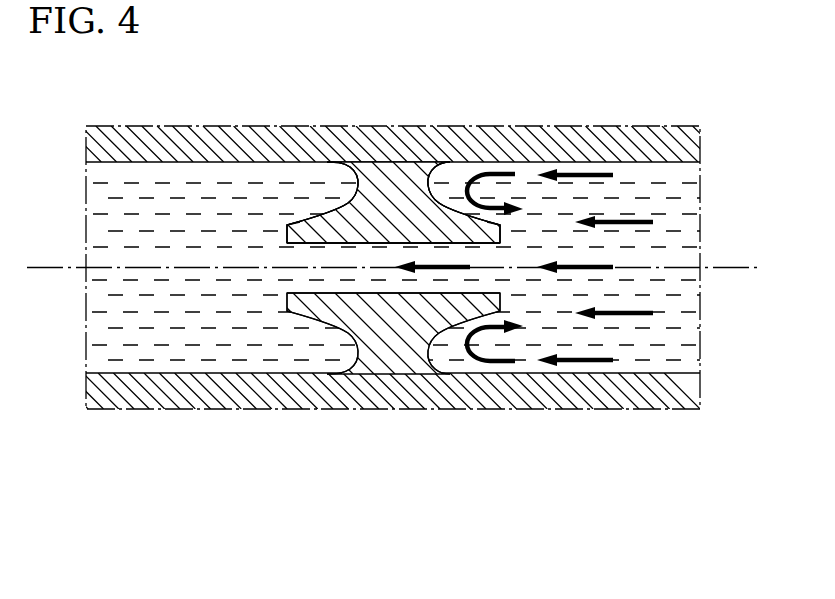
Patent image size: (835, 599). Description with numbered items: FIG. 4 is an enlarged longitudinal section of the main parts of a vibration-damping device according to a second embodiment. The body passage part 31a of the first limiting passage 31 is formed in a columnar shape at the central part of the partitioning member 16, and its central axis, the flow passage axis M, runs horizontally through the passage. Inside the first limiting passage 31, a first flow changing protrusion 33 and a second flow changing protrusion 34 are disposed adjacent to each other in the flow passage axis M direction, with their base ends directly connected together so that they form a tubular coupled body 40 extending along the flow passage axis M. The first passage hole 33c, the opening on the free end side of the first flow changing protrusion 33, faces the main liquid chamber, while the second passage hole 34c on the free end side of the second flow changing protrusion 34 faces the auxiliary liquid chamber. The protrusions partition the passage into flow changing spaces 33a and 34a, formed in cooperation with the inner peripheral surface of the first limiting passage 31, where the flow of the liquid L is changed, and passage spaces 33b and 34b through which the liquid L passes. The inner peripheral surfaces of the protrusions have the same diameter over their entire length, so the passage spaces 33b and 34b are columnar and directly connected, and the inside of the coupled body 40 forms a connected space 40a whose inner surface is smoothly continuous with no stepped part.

The partitioning member 16 is at (248, 423).
The first limiting passage 31 is at (135, 386).
The body passage part 31a is at (208, 372).
The first flow changing protrusion 33 is at (477, 309).
The flow changing space 33a is at (468, 181).
The first passage space 33b is at (440, 240).
The first passage hole 33c is at (496, 242).
The second flow changing protrusion 34 is at (313, 313).
The flow changing space 34a is at (316, 181).
The second passage space 34b is at (344, 240).
The second passage hole 34c is at (288, 240).
The coupled body 40 is at (293, 326).
The connected space 40a is at (393, 304).
The flow passage axis M is at (736, 267).
The liquid L is at (687, 335).